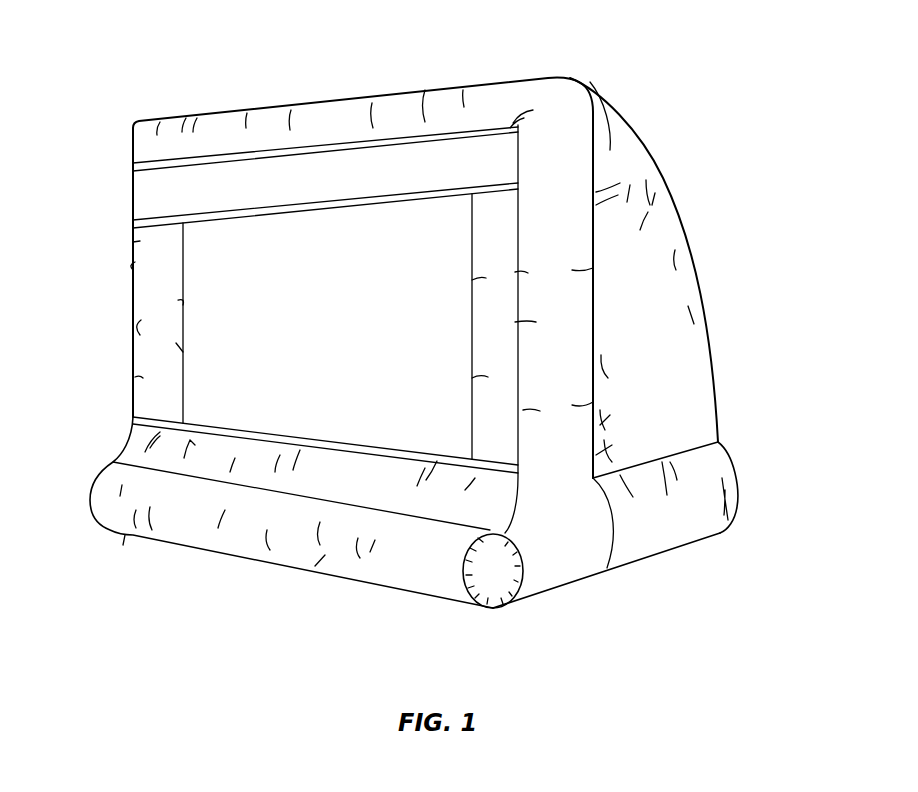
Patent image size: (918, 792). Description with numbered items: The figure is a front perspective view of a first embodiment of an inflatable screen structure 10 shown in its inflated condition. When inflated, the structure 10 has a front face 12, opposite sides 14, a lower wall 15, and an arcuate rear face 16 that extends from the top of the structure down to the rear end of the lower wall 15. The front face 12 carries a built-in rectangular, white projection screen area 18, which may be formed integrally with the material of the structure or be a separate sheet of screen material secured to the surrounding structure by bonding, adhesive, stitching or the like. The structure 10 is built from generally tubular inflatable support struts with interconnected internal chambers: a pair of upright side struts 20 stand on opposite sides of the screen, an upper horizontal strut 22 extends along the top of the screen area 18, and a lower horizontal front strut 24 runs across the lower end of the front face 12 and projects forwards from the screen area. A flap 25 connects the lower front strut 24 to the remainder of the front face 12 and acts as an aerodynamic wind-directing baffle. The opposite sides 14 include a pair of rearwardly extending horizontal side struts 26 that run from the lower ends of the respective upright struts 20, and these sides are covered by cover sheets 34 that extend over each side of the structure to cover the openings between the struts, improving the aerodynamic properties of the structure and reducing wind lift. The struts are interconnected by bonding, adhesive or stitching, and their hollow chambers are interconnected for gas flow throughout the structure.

The inflatable screen structure 10 is at (710, 88).
The front face 12 is at (320, 182).
The opposite sides 14 is at (677, 323).
The lower wall 15 is at (542, 592).
The arcuate rear face 16 is at (655, 170).
The projection screen area 18 is at (364, 324).
The upright side struts 20 is at (148, 290).
The upper horizontal strut 22 is at (349, 112).
The lower horizontal front strut 24 is at (413, 568).
The flap 25 is at (485, 492).
The horizontal side struts 26 is at (650, 535).
The cover sheets 34 is at (670, 290).